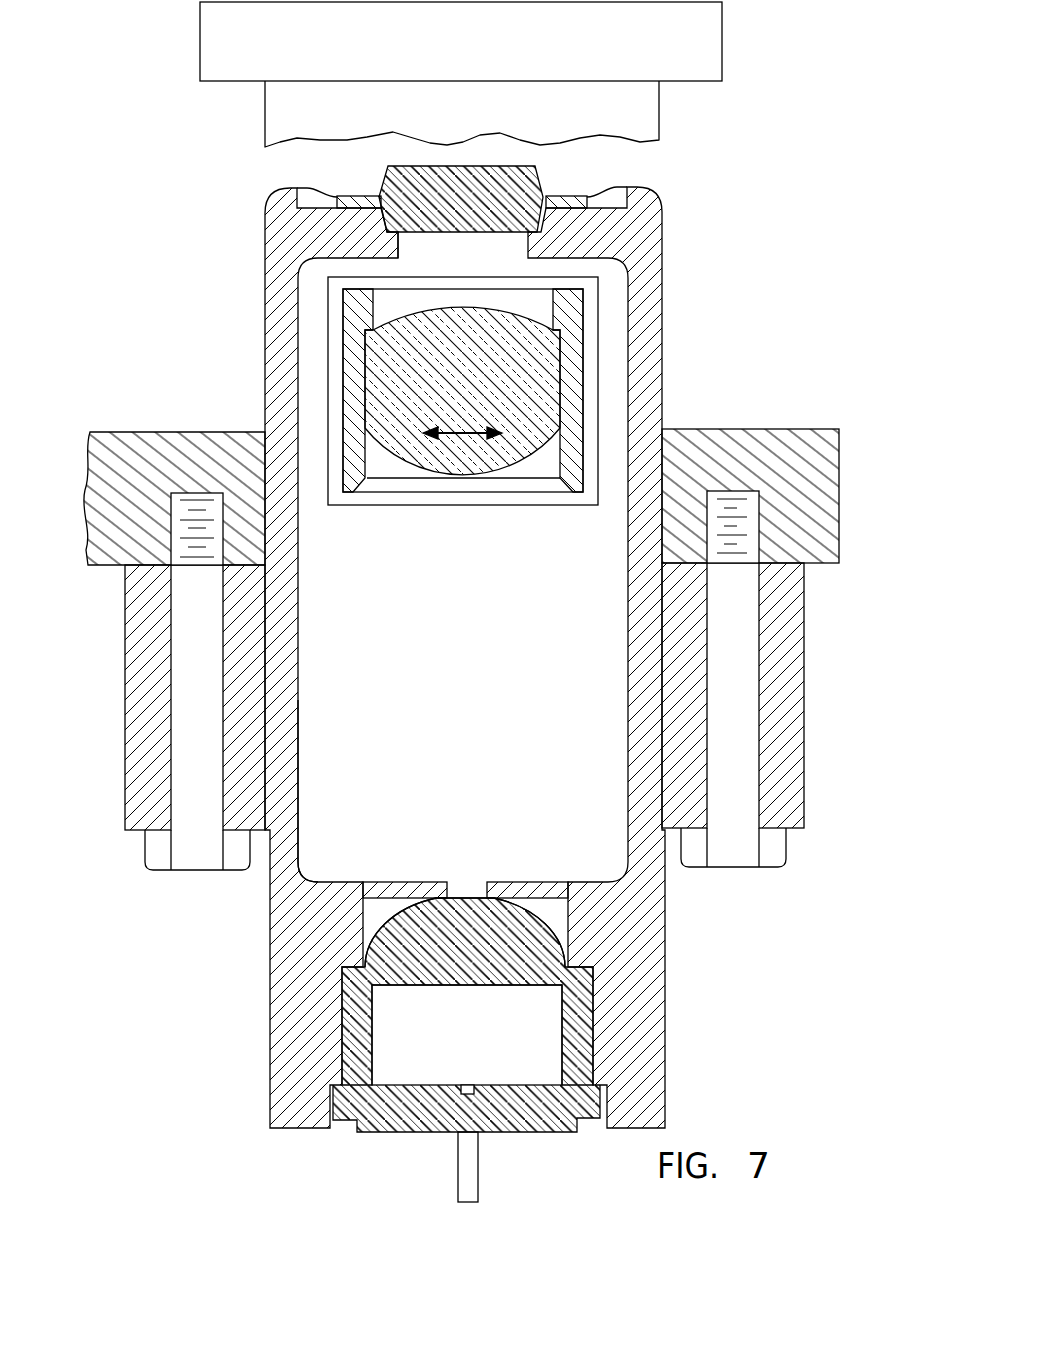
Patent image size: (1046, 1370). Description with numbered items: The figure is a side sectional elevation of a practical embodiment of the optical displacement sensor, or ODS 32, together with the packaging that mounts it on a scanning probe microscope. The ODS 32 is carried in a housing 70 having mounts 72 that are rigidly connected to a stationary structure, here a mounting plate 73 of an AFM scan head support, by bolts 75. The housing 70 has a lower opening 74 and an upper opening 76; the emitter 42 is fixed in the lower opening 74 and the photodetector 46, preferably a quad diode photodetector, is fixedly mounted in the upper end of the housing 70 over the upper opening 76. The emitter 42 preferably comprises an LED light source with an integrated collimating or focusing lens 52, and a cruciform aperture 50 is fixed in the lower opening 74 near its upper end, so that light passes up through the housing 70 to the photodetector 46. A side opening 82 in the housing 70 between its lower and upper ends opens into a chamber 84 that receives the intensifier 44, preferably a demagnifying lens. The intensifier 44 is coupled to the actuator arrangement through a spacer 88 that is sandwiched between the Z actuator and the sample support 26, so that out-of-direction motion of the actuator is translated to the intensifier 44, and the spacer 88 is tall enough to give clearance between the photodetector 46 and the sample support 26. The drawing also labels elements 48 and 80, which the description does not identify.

The sample support 26 is at (713, 40).
The spacer 88 is at (640, 118).
The photodetector 46 is at (418, 168).
The upper opening 76 is at (405, 250).
The ODS 32 is at (462, 675).
The side opening 82 is at (597, 314).
The housing 70 is at (668, 343).
The mounting plate 73 is at (787, 440).
The chamber 84 is at (585, 420).
The intensifier 44 is at (465, 455).
The mounts 72 is at (132, 573).
The bolts 75 is at (153, 858).
The inner wall of housing 80 is at (305, 793).
The cruciform aperture 50 is at (532, 880).
The collimating or focusing lens 52 is at (517, 932).
The emitter 42 is at (597, 1012).
The sensor holder 48 is at (590, 1062).
The lower opening 74 is at (603, 1088).